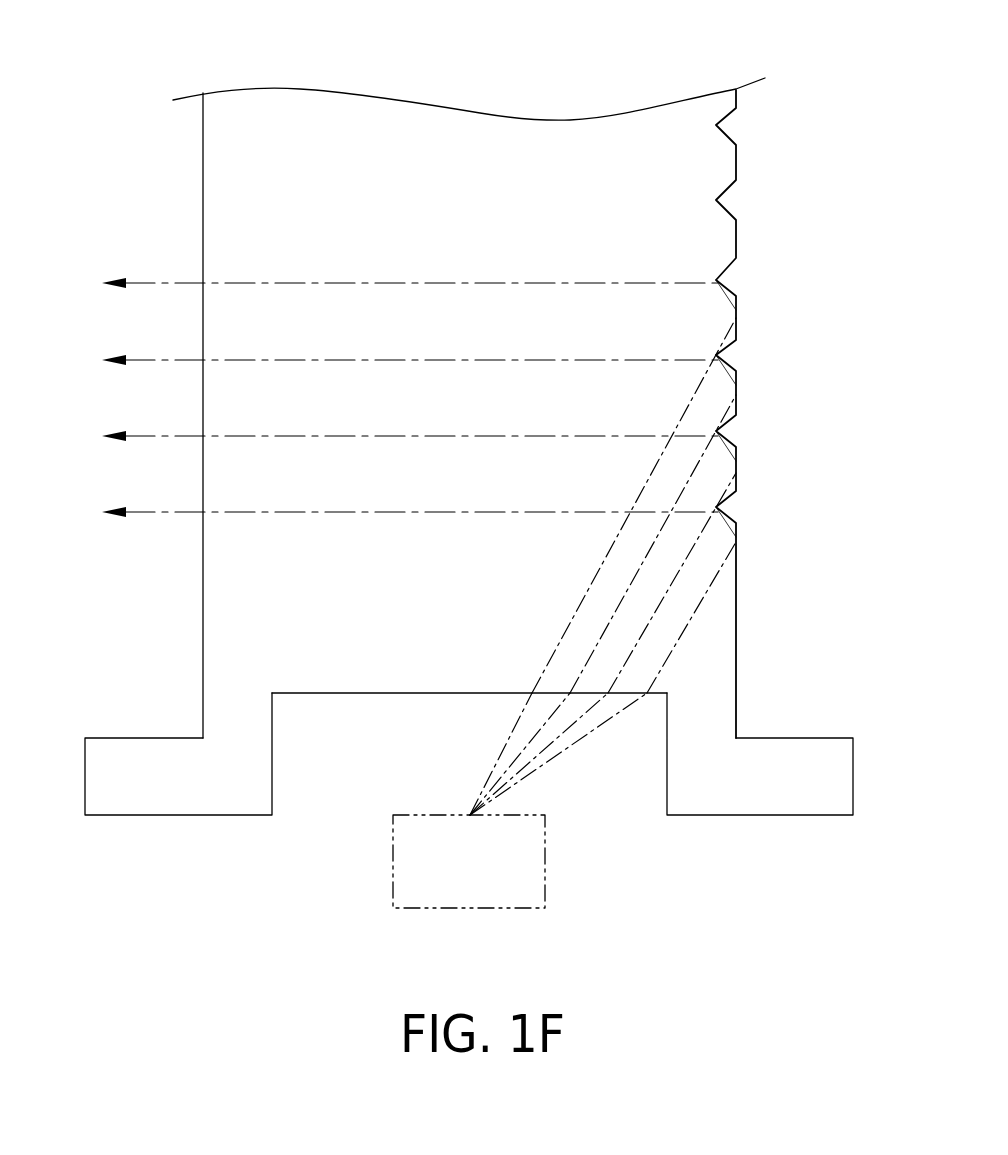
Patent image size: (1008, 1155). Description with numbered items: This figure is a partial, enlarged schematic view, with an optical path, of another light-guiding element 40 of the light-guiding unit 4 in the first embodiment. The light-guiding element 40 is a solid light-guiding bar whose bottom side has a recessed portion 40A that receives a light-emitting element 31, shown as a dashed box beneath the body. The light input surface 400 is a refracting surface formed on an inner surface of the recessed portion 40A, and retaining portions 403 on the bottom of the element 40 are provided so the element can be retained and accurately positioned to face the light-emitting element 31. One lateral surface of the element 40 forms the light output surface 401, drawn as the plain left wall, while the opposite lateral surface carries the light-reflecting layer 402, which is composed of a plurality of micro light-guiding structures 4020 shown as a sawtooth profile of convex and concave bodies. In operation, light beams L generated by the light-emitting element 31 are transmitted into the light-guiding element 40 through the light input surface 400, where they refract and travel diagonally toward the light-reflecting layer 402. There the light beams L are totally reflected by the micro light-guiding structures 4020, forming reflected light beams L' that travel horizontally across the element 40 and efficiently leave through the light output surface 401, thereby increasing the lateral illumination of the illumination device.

The light-guiding unit 4 is at (543, 50).
The light-guiding element 40 is at (523, 152).
The light output surface 401 is at (203, 152).
The light-reflecting layer 402 is at (800, 125).
The micro light-guiding structure 4020 is at (728, 290).
The retaining portion 403 is at (135, 765).
The light input surface 400 is at (667, 768).
The recessed portion 40A is at (362, 750).
The light-emitting element 31 is at (418, 869).
The light beams L is at (634, 566).
The reflected light beams L' is at (398, 398).